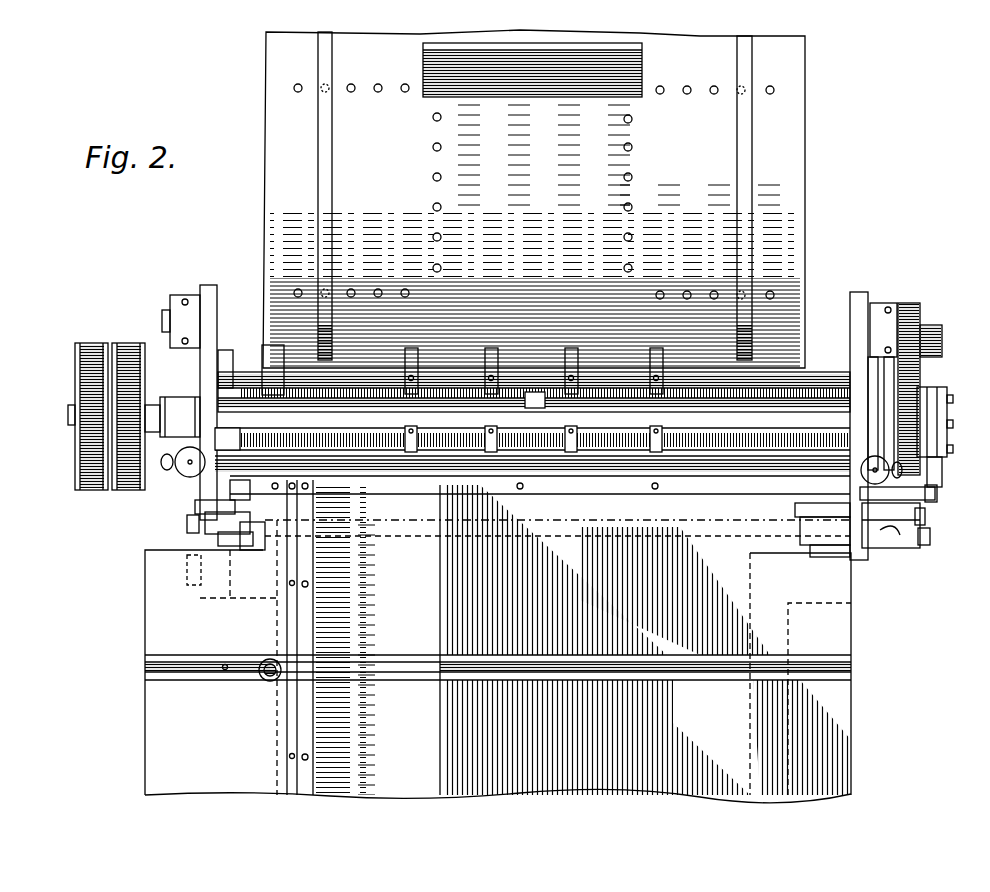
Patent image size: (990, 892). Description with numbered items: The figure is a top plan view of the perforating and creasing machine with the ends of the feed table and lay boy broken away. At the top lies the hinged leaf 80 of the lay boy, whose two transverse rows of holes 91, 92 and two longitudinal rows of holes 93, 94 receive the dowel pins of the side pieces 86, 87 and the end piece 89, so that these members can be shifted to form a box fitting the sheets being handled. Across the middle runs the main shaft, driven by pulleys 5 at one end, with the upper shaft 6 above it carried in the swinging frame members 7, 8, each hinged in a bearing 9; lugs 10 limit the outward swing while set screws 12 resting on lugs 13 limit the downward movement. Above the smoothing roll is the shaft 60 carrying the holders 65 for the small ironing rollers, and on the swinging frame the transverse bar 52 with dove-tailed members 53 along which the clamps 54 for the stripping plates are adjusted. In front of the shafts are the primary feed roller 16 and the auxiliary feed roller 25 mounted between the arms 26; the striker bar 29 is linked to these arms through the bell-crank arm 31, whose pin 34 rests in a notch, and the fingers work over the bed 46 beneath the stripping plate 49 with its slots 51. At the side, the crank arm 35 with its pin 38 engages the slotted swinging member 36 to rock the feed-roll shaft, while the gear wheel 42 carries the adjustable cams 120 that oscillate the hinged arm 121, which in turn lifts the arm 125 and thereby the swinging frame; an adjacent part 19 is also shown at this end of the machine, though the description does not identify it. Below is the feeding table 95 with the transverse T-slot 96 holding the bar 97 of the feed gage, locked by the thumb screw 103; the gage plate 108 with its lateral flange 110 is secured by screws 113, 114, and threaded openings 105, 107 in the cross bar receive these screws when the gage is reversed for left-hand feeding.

The pulleys 5 is at (898, 620).
The shaft 6 is at (830, 325).
The swinging frame member 7 is at (217, 330).
The swinging frame member 8 is at (850, 334).
The bearing 9 is at (180, 313).
The lugs 10 is at (212, 284).
The set screws 12 is at (185, 468).
The lugs 13 is at (145, 672).
The primary feed roller 16 is at (728, 478).
The gear housing 19 is at (945, 385).
The auxiliary feed roller 25 is at (648, 462).
The arms 26 is at (200, 508).
The bar 29 is at (600, 460).
The arm 31 is at (240, 498).
The pin 34 is at (260, 550).
The crank arm 35 is at (890, 520).
The swinging member 36 is at (925, 515).
The pin 38 is at (930, 537).
The gear wheel 42 is at (912, 303).
The bed 46 is at (700, 462).
The stripping plate 49 is at (490, 450).
The openings or slots 51 is at (312, 445).
The transverse bar 52 is at (533, 430).
The dove-tailed members 53 is at (345, 425).
The clamps 54 is at (530, 452).
The shaft 60 is at (256, 372).
The holder 65 is at (491, 350).
The hinged leaf 80 is at (534, 199).
The side piece 86 is at (322, 176).
The side piece 87 is at (752, 205).
The end piece 89 is at (540, 82).
The holes 91 is at (376, 289).
The holes 92 is at (400, 92).
The holes 93 is at (441, 150).
The holes 94 is at (632, 148).
The feeding table 95 is at (165, 740).
The T-slot 96 is at (190, 672).
The bar 97 is at (240, 668).
The thumb screw 103 is at (265, 680).
The screw-threaded opening 105 is at (293, 490).
The hole 107 is at (294, 580).
The gage plate 108 is at (621, 640).
The lateral flange 110 is at (308, 630).
The screw 113 is at (318, 490).
The screw 114 is at (308, 583).
The cams 120 is at (942, 480).
The arm 121 is at (942, 350).
The arm 125 is at (875, 405).